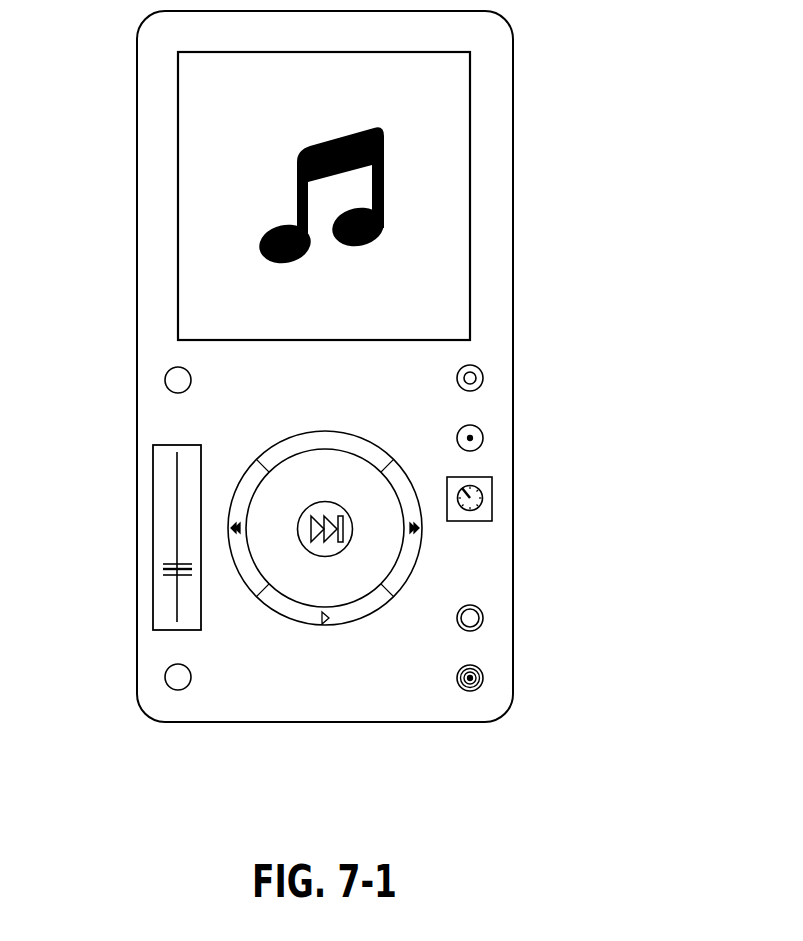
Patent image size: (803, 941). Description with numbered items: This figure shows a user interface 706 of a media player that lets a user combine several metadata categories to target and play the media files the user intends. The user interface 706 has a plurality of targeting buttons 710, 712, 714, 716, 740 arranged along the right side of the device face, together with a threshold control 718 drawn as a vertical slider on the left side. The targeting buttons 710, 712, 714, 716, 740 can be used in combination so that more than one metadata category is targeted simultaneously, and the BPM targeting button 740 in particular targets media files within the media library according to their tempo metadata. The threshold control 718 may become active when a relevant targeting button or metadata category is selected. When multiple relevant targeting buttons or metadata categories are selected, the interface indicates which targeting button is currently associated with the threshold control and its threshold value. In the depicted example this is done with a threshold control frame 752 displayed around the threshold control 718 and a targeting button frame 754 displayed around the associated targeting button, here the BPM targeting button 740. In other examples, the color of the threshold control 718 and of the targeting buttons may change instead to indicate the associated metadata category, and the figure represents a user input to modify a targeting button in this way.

The user interface 706 is at (590, 402).
The targeting button 710 is at (484, 440).
The targeting button 712 is at (484, 378).
The targeting button 714 is at (484, 612).
The targeting button 716 is at (482, 672).
The threshold control 718 is at (181, 474).
The BPM targeting button 740 is at (484, 503).
The threshold control frame 752 is at (153, 600).
The targeting button frame 754 is at (493, 485).